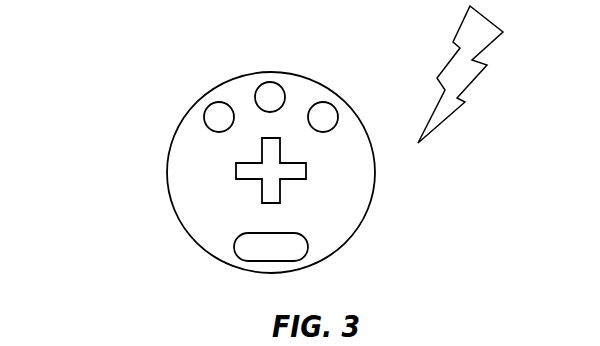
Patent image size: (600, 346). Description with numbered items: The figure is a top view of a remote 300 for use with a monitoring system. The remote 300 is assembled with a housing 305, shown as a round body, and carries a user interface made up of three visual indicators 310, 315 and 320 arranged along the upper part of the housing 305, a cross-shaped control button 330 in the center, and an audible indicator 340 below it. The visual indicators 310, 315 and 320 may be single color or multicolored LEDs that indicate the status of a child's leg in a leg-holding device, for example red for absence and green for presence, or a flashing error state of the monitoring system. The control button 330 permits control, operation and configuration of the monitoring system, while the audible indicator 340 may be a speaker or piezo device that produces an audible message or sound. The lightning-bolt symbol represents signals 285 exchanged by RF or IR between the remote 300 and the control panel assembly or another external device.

The signals 285 is at (440, 72).
The remote 300 is at (132, 118).
The housing 305 is at (168, 191).
The visual indicator 310 is at (212, 107).
The visual indicator 315 is at (269, 82).
The visual indicator 320 is at (325, 107).
The control button 330 is at (292, 180).
The audible indicator 340 is at (240, 258).